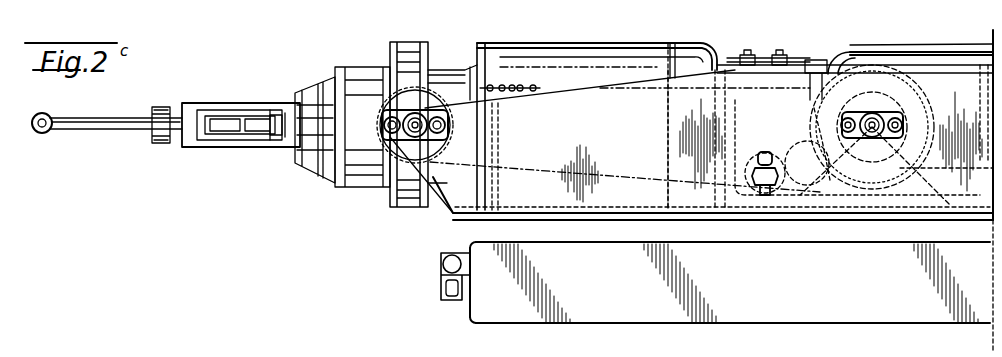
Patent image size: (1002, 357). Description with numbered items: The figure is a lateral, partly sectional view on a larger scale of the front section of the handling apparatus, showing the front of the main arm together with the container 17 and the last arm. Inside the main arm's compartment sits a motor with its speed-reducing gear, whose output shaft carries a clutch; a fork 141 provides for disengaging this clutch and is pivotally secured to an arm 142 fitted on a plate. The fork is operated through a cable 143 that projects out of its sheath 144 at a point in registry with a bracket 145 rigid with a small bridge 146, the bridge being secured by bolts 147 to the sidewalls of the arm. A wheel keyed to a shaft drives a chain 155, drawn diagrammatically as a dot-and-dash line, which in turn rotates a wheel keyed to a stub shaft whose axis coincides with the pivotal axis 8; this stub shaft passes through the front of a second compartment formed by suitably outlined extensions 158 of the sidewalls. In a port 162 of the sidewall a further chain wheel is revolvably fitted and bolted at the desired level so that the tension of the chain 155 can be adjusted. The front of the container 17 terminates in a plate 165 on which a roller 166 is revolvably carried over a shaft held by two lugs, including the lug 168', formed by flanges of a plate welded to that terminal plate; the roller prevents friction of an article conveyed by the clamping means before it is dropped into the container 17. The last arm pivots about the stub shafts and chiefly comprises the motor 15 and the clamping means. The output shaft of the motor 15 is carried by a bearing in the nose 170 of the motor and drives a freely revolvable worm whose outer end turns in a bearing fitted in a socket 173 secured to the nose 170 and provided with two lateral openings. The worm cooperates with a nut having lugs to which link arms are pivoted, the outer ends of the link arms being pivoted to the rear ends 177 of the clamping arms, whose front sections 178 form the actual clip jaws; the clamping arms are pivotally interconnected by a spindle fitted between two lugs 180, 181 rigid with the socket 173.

The pivotal axis 8 is at (372, 177).
The motor 15 is at (586, 58).
The container 17 is at (772, 298).
The fork 141 is at (792, 138).
The arm 142 is at (814, 108).
The cable 143 is at (831, 75).
The sheath 144 is at (853, 55).
The bracket 145 is at (827, 78).
The small bridge 146 is at (820, 76).
The bolt 147 is at (744, 56).
The chain 155 is at (684, 87).
The extension of sidewall 158 is at (626, 124).
The port 162 is at (762, 196).
The plate 165 is at (470, 325).
The roller 166 is at (441, 283).
The lug 168' is at (440, 278).
The nose of the motor 170 is at (300, 150).
The socket 173 is at (228, 107).
The rear end of clamping arm 177 is at (97, 126).
The front section of clamping arm 178 is at (41, 134).
The lug 180 is at (156, 106).
The lug 181 is at (150, 142).